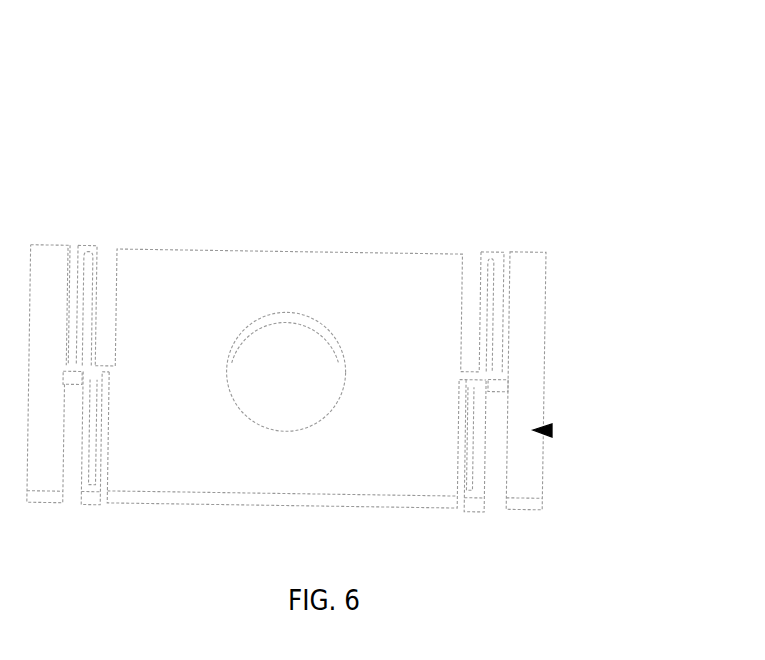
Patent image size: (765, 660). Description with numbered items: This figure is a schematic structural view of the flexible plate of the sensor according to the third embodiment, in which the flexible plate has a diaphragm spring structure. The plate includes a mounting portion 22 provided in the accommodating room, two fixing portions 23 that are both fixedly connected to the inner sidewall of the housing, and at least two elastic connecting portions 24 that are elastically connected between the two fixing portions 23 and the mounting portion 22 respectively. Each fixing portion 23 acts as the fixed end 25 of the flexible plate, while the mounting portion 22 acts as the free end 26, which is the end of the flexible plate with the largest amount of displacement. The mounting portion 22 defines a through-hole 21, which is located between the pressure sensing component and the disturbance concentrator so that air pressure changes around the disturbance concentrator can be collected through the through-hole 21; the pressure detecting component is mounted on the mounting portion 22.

The through-hole 21 is at (293, 337).
The mounting portion 22 is at (383, 310).
The fixing portion 23 is at (532, 335).
The elastic connecting portion 24 is at (490, 262).
The fixed end 25 is at (551, 430).
The free end 26 is at (317, 264).